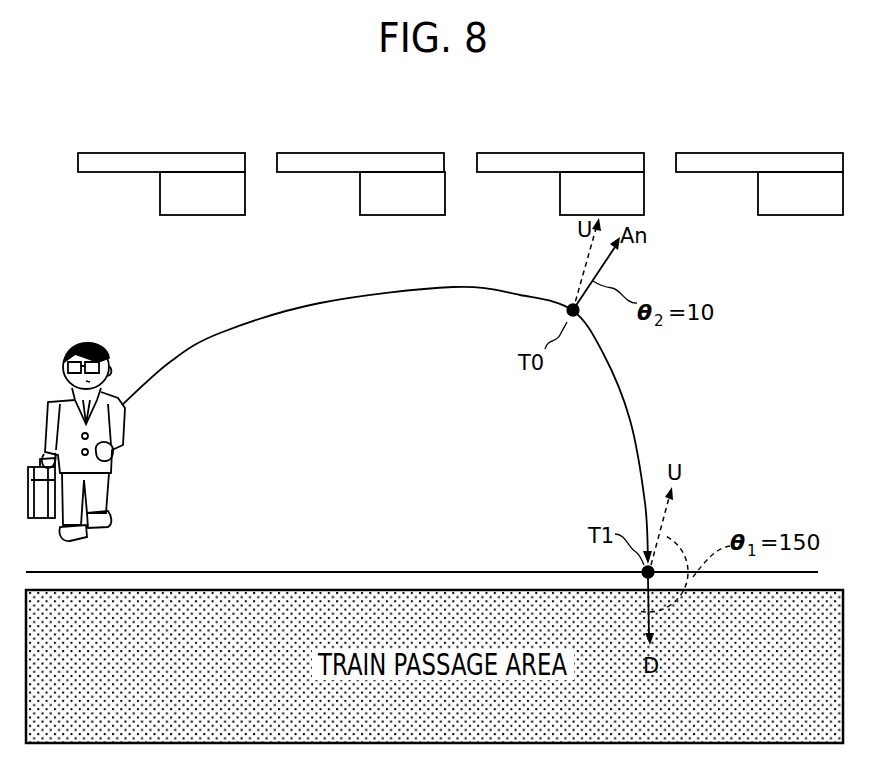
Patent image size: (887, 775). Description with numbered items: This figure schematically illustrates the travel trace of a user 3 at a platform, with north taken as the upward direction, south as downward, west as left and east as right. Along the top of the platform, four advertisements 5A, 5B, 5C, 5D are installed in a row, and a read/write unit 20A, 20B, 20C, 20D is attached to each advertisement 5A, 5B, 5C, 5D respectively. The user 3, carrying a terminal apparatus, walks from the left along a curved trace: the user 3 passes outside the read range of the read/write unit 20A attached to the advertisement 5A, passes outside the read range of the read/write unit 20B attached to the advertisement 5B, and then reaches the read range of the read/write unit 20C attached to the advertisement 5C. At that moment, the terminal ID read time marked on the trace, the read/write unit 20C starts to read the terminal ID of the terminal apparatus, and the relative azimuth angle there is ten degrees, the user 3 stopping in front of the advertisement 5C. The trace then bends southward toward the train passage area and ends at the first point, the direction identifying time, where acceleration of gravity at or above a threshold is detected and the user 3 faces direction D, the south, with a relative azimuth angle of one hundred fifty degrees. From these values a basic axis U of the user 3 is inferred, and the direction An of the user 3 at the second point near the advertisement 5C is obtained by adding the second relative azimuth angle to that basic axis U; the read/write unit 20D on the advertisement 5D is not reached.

The user 3 is at (95, 346).
The advertisement 5A is at (185, 152).
The advertisement 5B is at (384, 152).
The advertisement 5C is at (584, 152).
The advertisement 5D is at (783, 152).
The read/write unit 20A is at (160, 190).
The read/write unit 20B is at (360, 190).
The read/write unit 20C is at (560, 190).
The read/write unit 20D is at (758, 190).